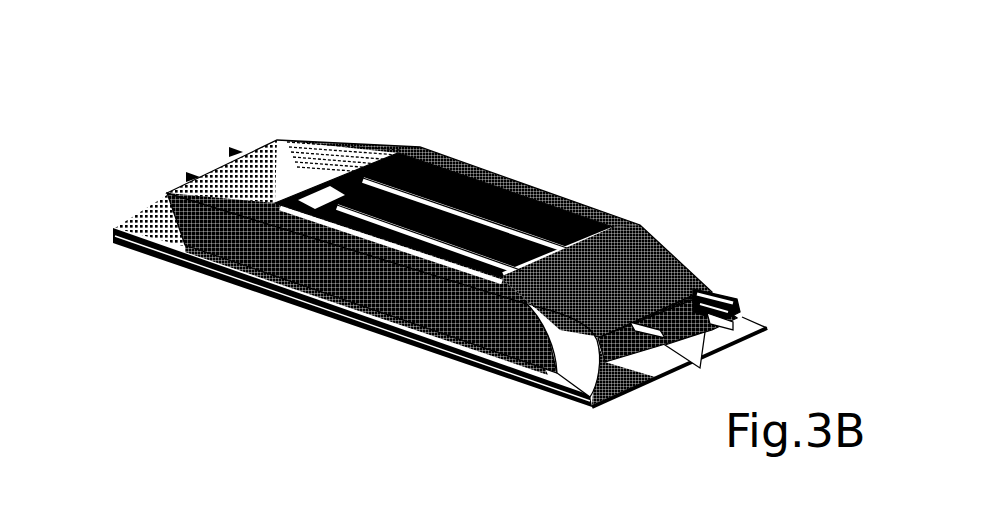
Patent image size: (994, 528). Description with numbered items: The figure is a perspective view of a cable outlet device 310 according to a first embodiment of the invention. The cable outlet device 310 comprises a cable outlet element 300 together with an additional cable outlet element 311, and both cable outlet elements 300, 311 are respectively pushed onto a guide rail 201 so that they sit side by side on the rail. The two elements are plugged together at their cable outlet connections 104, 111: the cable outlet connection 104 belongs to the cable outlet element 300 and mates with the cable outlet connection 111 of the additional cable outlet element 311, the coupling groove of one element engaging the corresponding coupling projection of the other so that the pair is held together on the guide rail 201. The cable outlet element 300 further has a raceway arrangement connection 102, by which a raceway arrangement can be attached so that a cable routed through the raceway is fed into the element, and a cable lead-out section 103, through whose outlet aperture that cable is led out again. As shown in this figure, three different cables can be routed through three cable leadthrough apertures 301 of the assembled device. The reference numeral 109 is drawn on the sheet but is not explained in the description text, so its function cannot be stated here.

The cable outlet device 310 is at (688, 80).
The cable outlet element 300 is at (625, 212).
The additional cable outlet element 311 is at (440, 142).
The cable outlet connection 111 is at (513, 185).
The cable outlet connection 104 is at (512, 193).
The cable lead-out section 103 is at (583, 214).
The housing end portion 109 is at (258, 152).
The raceway arrangement connection 102 is at (727, 290).
The guide rail 201 is at (772, 331).
The cable leadthrough apertures 301 is at (737, 350).